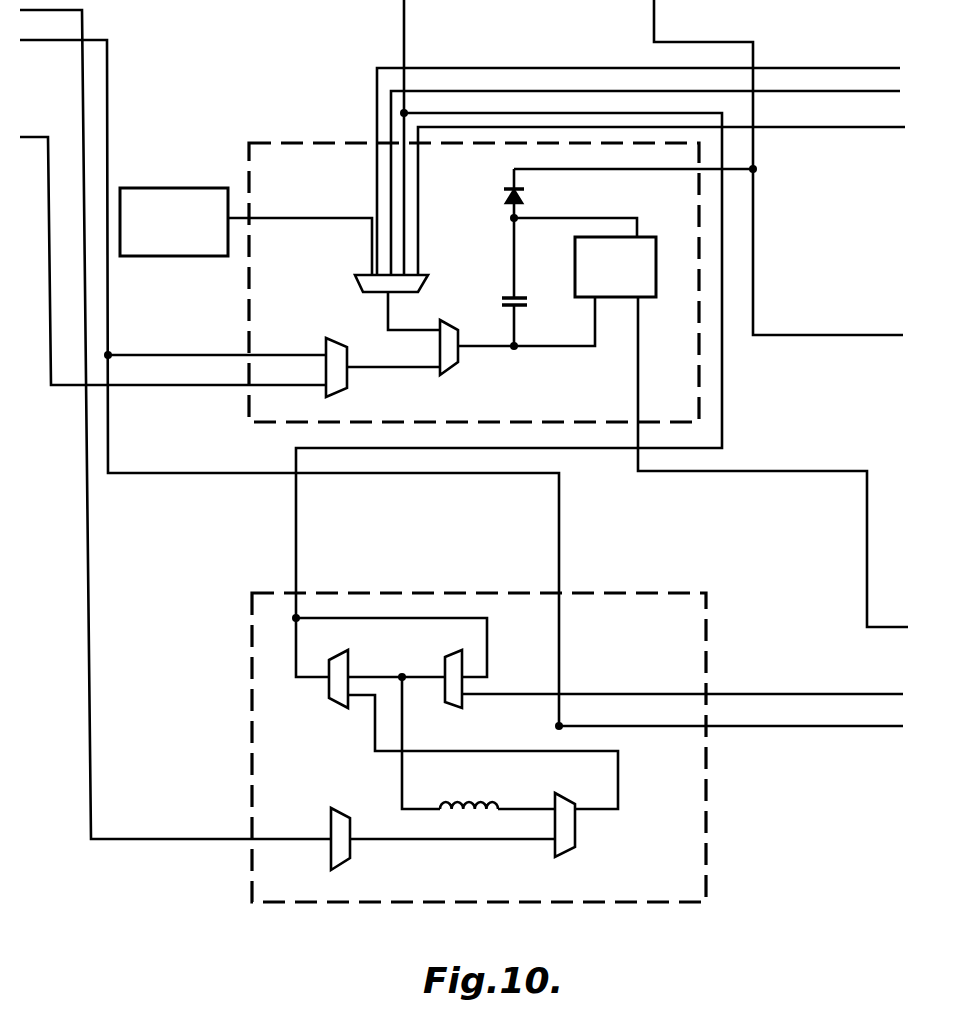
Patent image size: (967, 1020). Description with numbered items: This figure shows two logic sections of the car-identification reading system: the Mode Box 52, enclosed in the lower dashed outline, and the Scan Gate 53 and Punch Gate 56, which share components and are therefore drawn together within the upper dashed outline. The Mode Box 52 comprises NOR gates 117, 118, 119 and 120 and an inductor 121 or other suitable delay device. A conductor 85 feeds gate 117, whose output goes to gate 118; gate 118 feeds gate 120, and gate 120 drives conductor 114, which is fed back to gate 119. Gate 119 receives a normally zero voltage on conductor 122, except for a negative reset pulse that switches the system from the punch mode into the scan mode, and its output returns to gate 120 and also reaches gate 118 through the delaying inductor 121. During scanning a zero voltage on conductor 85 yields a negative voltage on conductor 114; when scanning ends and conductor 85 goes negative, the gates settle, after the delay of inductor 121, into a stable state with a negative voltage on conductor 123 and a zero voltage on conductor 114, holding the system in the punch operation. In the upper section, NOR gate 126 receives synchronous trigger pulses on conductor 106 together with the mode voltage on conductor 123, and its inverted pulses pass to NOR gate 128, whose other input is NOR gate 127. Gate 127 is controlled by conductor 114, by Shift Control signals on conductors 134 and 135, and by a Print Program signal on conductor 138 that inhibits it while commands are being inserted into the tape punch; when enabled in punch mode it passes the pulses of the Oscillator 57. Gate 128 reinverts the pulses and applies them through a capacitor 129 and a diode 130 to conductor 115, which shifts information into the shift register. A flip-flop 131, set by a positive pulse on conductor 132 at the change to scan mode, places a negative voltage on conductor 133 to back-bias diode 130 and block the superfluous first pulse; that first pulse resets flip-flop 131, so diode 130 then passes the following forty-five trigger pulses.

The conductor 85 is at (287, 446).
The conductor 123 is at (461, 402).
The conductor 106 is at (173, 245).
The Oscillator 57 is at (246, 217).
The Scan Gate 53 is at (429, 282).
The Punch Gate 56 is at (429, 282).
The Mode Box 52 is at (446, 747).
The conductor 114 is at (475, 338).
The conductor 115 is at (750, 167).
The conductor 135 is at (638, 158).
The conductor 134 is at (645, 183).
The conductor 138 is at (661, 201).
The NOR gate 127 is at (360, 292).
The NOR gate 126 is at (272, 358).
The NOR gate 128 is at (517, 349).
The capacitor 129 is at (487, 284).
The diode 130 is at (486, 194).
The conductor 133 is at (633, 201).
The flip-flop 131 is at (615, 267).
The conductor 132 is at (773, 462).
The NOR gate 120 is at (338, 692).
The NOR gate 119 is at (435, 672).
The conductor 122 is at (682, 681).
The inductor 121 is at (478, 743).
The NOR gate 117 is at (364, 852).
The NOR gate 118 is at (582, 838).